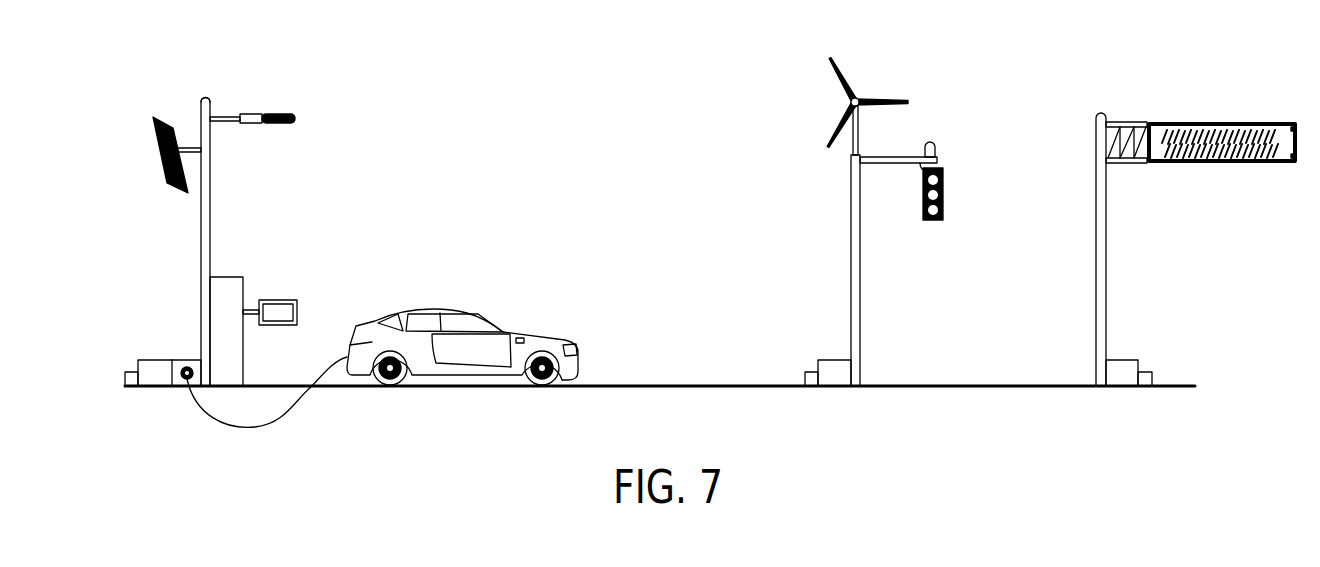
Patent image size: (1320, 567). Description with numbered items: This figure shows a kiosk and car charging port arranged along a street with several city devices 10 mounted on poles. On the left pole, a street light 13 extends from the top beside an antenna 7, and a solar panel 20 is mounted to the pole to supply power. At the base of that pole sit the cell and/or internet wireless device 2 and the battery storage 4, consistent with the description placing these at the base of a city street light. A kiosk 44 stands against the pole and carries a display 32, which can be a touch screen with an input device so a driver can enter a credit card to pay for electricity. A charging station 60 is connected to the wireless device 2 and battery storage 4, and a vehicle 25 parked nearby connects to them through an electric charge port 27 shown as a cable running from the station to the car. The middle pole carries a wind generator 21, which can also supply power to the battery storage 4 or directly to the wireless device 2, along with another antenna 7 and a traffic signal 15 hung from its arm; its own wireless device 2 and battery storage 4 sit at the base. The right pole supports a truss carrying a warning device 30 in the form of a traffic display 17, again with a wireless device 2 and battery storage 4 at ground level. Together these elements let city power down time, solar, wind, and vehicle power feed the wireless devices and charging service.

The cell and/or internet wireless device 2 is at (122, 376).
The battery storage 4 is at (150, 360).
The antenna 7 is at (205, 96).
The city device 10 is at (201, 218).
The street light 13 is at (282, 124).
The traffic signal 15 is at (935, 220).
The traffic display 17 is at (1215, 122).
The solar panel 20 is at (152, 118).
The wind generator 21 is at (858, 96).
The vehicle 25 is at (437, 311).
The electric charge port 27 is at (256, 429).
The warning device 30 is at (1145, 122).
The display 32 is at (278, 300).
The kiosk 44 is at (233, 277).
The charging station 60 is at (183, 382).